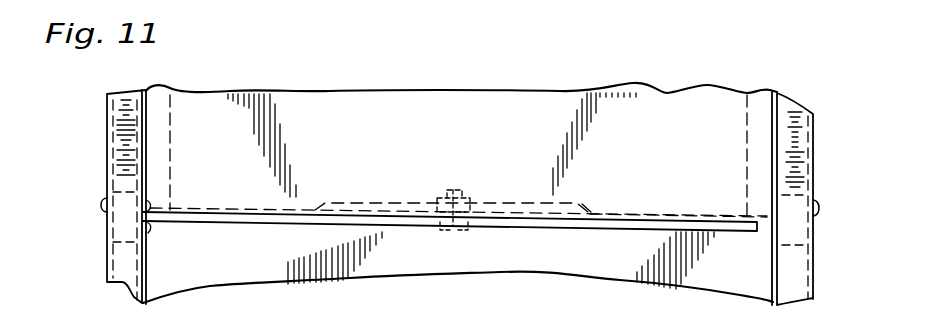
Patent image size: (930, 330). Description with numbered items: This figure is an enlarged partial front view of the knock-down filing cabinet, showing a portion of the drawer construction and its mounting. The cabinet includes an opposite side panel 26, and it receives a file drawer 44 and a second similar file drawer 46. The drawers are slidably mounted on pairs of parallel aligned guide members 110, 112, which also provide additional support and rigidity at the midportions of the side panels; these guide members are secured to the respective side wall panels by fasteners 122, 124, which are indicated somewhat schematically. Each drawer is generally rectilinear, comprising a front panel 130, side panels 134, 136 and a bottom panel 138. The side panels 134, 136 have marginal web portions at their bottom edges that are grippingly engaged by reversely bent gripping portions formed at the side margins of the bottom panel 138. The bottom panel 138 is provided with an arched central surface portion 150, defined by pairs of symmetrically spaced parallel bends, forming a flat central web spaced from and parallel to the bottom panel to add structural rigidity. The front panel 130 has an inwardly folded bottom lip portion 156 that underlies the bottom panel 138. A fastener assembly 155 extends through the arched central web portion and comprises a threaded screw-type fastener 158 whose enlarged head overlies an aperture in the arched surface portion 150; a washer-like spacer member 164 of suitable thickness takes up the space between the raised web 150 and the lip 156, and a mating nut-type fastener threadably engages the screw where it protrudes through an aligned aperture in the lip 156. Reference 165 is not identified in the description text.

The side panel 26 is at (817, 159).
The file drawer 44 is at (262, 268).
The file drawer 46 is at (535, 120).
The guide member 110 is at (768, 240).
The guide member 112 is at (148, 238).
The fastener 122 is at (101, 205).
The fastener 124 is at (105, 153).
The front panel 130 is at (624, 142).
The side panel 134 is at (746, 118).
The side panel 136 is at (172, 153).
The bottom panel 138 is at (632, 212).
The arched central surface portion 150 is at (364, 200).
The fastener assembly 155 is at (461, 187).
The lip portion 156 is at (558, 227).
The threaded screw-type fastener 158 is at (468, 222).
The washer-like spacer member 164 is at (440, 221).
The clamp upper projection 165 is at (471, 195).